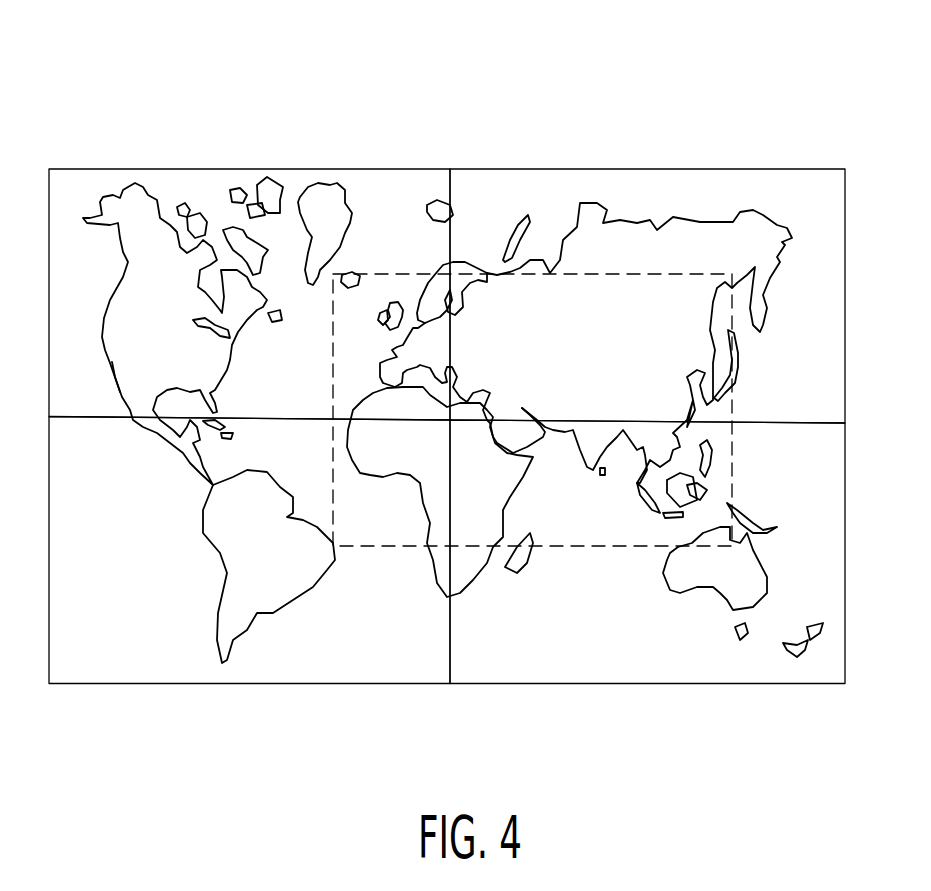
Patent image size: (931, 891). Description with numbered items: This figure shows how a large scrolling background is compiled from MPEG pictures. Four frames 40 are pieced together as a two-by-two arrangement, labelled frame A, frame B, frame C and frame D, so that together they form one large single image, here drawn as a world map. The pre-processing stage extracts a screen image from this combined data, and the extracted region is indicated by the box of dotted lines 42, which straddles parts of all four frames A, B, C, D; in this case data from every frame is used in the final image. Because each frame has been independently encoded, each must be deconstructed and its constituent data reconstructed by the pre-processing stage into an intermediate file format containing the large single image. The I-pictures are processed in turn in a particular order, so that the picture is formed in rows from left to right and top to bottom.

The frames 40 is at (510, 130).
The box of dotted lines 42 is at (575, 546).
The frame A is at (176, 195).
The frame B is at (780, 200).
The frame C is at (126, 665).
The frame D is at (732, 657).